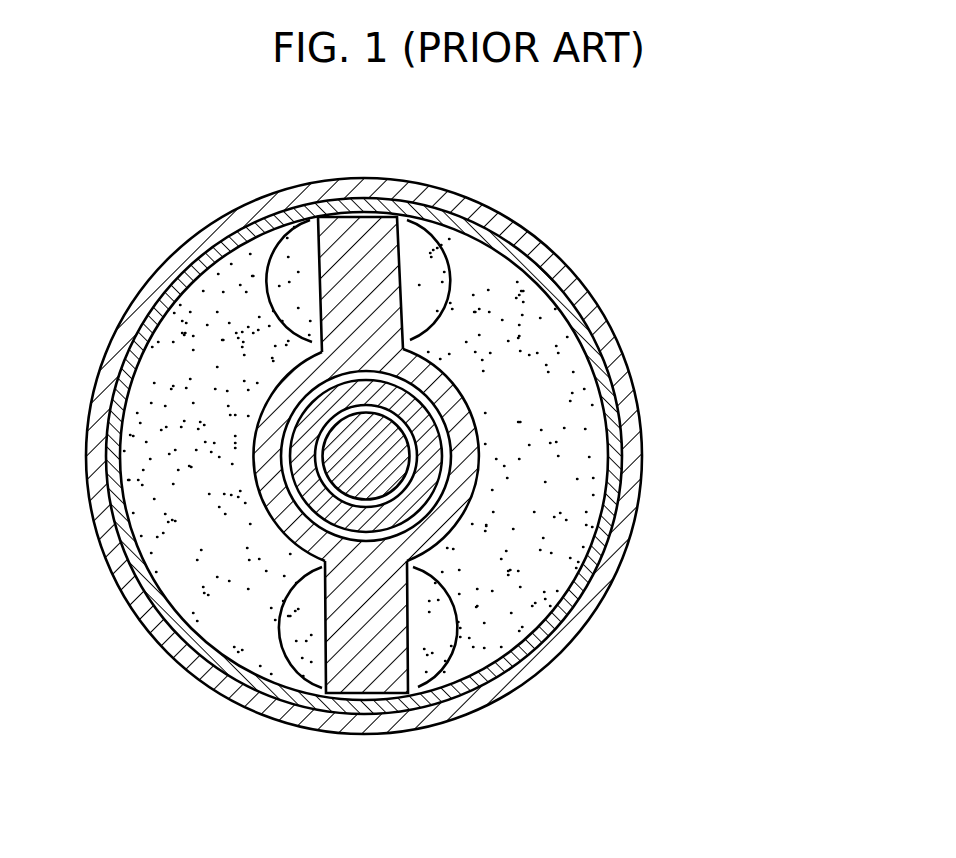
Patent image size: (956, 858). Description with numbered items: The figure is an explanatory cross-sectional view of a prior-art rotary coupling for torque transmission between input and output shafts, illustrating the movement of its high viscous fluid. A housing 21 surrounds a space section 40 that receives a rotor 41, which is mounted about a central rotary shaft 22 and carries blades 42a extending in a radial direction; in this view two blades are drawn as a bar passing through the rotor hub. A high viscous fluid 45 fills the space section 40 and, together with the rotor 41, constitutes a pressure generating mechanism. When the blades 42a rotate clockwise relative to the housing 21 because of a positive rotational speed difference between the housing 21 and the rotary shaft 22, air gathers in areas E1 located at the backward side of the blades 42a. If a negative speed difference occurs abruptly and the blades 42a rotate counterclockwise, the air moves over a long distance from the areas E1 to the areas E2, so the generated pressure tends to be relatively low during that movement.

The housing 21 is at (202, 238).
The rotary shaft 22 is at (430, 450).
The space section 40 is at (545, 360).
The rotor 41 is at (292, 382).
The blades 42a is at (350, 232).
The high viscous fluid 45 is at (223, 593).
The areas E1 is at (290, 247).
The areas E2 is at (423, 242).